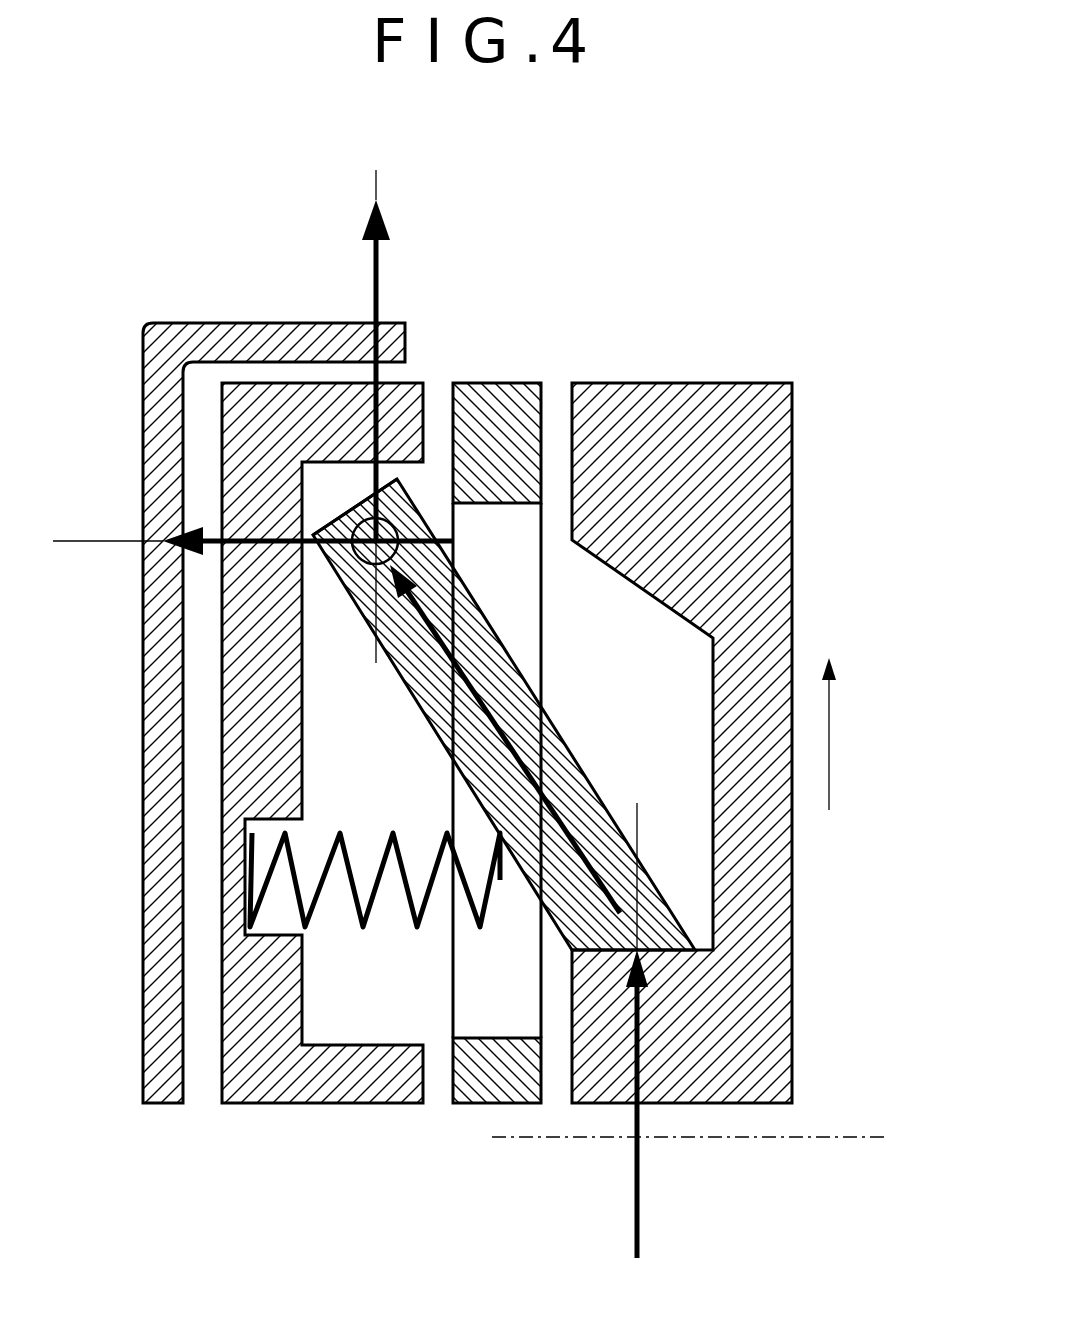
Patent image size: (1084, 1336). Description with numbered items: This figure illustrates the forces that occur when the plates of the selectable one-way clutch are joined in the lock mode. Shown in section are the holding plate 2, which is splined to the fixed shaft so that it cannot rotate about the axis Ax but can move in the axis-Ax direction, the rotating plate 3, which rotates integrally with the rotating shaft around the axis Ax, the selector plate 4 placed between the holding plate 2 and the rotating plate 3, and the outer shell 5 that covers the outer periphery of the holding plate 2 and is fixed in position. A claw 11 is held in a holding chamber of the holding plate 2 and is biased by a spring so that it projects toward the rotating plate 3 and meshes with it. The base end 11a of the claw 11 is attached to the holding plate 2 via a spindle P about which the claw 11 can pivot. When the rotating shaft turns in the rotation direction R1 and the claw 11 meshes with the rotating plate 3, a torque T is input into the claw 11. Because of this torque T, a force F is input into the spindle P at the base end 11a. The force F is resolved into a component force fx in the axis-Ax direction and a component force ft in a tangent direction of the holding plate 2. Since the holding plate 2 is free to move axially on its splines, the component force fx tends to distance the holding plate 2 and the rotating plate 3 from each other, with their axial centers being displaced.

The holding plate 2 is at (242, 397).
The rotating plate 3 is at (668, 395).
The selector plate 4 is at (503, 405).
The outer shell 5 is at (143, 330).
The claw 11 is at (437, 683).
The base end 11a is at (360, 505).
The spindle P is at (392, 528).
The force F is at (497, 706).
The component force in tangent direction ft is at (378, 268).
The component force in axis direction fx is at (222, 553).
The torque T is at (640, 1193).
The rotation direction R1 is at (834, 717).
The axis Ax is at (709, 1138).